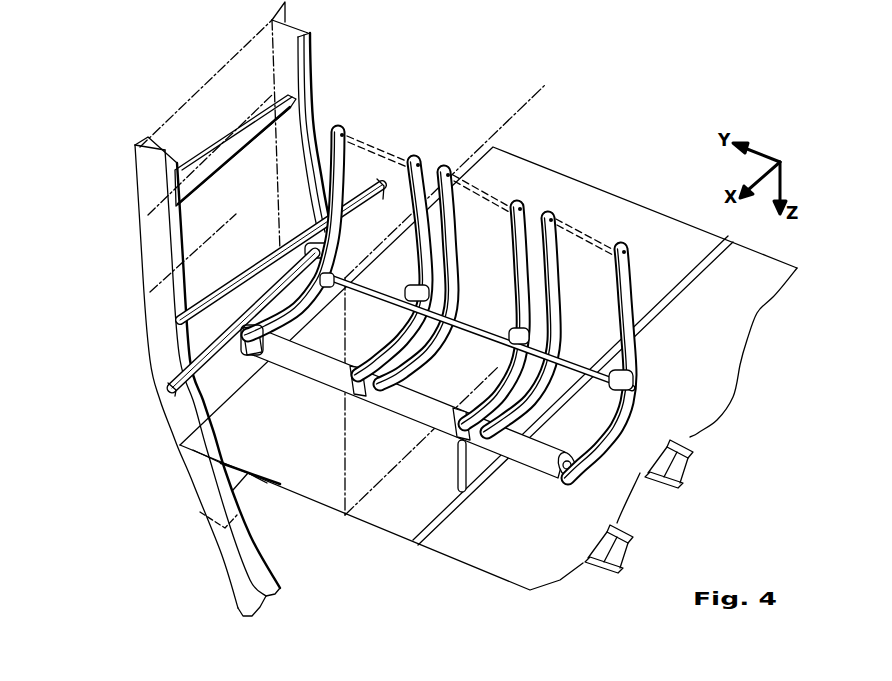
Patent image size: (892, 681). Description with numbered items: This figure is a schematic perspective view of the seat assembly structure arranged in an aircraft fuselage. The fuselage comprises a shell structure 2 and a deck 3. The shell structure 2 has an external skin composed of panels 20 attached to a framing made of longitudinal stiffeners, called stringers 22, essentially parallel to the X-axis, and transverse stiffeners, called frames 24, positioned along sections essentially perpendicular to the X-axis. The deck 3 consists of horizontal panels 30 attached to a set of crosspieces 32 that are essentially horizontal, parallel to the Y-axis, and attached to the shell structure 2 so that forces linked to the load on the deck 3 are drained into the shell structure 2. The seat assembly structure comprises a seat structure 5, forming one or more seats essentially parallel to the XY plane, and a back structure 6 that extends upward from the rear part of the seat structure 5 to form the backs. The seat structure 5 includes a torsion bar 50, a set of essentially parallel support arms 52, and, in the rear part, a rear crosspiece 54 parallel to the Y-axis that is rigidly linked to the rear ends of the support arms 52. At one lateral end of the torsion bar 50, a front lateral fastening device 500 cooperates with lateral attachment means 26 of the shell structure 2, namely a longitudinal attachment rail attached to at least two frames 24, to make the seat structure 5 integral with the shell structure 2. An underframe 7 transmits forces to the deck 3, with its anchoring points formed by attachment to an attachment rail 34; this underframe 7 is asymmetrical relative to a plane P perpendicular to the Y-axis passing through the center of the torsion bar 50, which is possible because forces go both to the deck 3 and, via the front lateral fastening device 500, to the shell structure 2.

The shell structure 2 is at (130, 170).
The panels 20 is at (178, 103).
The stringers 22 is at (245, 127).
The frames 24 is at (312, 50).
The lateral attachment means 26 is at (175, 393).
The front lateral fastening device 500 is at (243, 332).
The seat structure 5 is at (461, 340).
The torsion bar 50 is at (322, 367).
The support arms 52 is at (617, 470).
The rear crosspiece 54 is at (458, 328).
The back structure 6 is at (633, 257).
The underframe 7 is at (448, 468).
The deck 3 is at (488, 374).
The horizontal panels 30 is at (703, 350).
The crosspieces 32 is at (712, 450).
The attachment rail 34 is at (417, 520).
The plane P is at (345, 470).